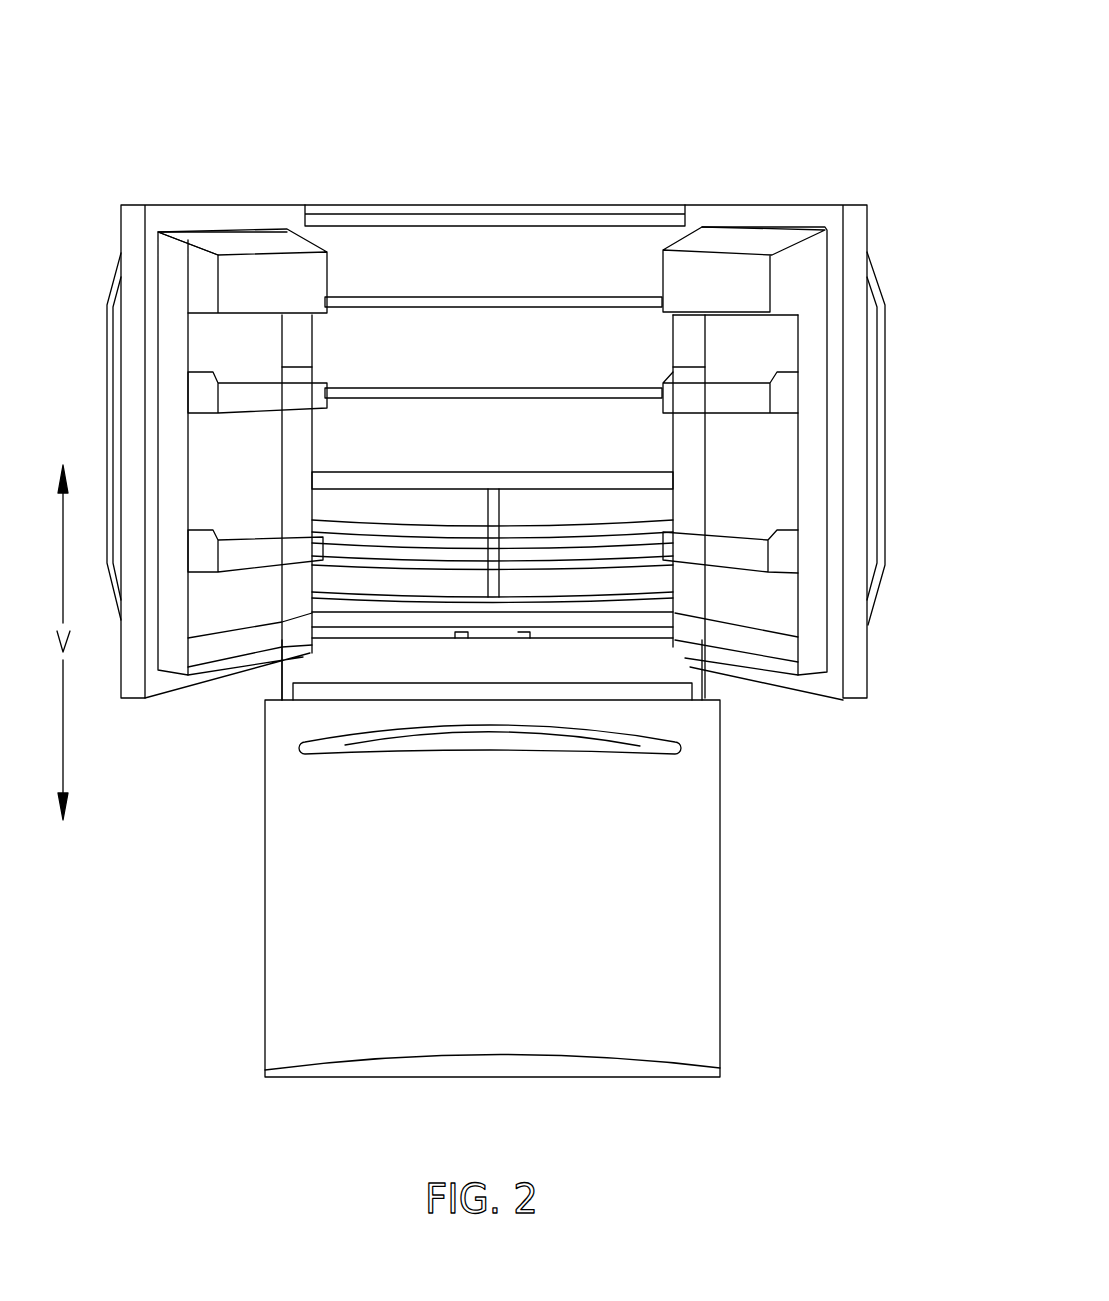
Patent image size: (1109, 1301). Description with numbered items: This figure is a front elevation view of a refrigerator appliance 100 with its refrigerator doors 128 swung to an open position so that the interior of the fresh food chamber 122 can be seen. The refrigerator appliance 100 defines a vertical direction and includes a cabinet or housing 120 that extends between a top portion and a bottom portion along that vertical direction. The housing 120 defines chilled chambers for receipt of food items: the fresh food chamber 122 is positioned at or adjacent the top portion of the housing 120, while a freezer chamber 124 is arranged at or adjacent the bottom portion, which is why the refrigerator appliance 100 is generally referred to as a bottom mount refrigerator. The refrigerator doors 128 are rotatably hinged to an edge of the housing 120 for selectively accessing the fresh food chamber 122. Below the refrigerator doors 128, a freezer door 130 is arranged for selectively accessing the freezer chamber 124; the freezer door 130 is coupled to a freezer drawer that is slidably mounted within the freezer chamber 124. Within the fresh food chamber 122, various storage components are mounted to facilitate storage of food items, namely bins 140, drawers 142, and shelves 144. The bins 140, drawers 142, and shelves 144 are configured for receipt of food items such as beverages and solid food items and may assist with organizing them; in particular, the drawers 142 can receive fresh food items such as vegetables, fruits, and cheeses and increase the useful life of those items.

The refrigerator appliance 100 is at (687, 120).
The housing 120 is at (707, 683).
The fresh food chamber 122 is at (493, 262).
The freezer chamber 124 is at (643, 930).
The refrigerator doors 128 is at (227, 218).
The freezer door 130 is at (312, 910).
The bins 140 is at (250, 553).
The drawers 142 is at (435, 537).
The shelves 144 is at (515, 304).